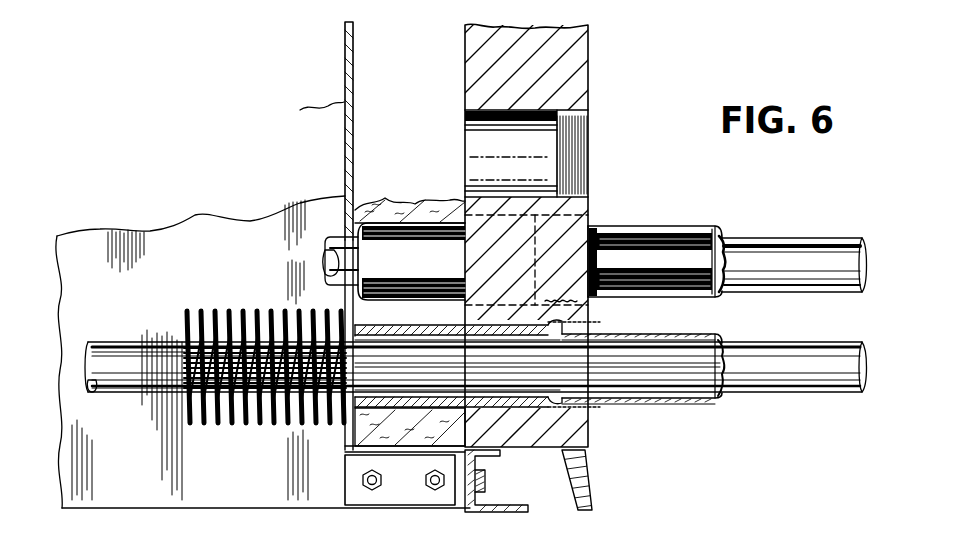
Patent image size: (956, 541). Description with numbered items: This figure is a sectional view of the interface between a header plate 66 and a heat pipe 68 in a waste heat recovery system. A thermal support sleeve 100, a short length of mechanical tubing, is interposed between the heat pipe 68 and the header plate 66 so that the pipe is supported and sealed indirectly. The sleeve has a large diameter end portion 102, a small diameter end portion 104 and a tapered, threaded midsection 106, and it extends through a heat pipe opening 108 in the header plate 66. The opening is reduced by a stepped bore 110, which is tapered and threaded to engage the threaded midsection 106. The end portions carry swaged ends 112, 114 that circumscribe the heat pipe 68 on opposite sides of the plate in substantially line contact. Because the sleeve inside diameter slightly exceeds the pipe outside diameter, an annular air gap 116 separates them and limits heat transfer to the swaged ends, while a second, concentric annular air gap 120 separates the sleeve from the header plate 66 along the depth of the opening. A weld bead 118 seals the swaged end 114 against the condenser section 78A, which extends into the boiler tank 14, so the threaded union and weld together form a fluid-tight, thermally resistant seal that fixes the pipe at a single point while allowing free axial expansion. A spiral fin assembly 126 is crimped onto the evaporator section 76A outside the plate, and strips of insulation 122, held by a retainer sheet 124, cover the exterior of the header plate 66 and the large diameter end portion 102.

The boiler tank 14 is at (590, 486).
The header plate 66 is at (462, 47).
The heat pipe 68 is at (114, 340).
The evaporator section 76A is at (340, 238).
The condenser section 78A is at (780, 248).
The thermal support sleeve 100 is at (626, 220).
The large diameter end portion 102 is at (385, 252).
The small diameter end portion 104 is at (692, 230).
The tapered, threaded midsection 106 is at (562, 343).
The heat pipe opening 108 is at (465, 122).
The stepped bore 110 is at (565, 175).
The swaged end 112 is at (370, 200).
The swaged end 114 is at (718, 300).
The annular air gap 116 is at (406, 340).
The weld bead 118 is at (730, 254).
The annular air gap 120 is at (490, 338).
The strips of insulation 122 is at (350, 200).
The retainer sheet 124 is at (345, 94).
The spiral fin assembly 126 is at (212, 308).